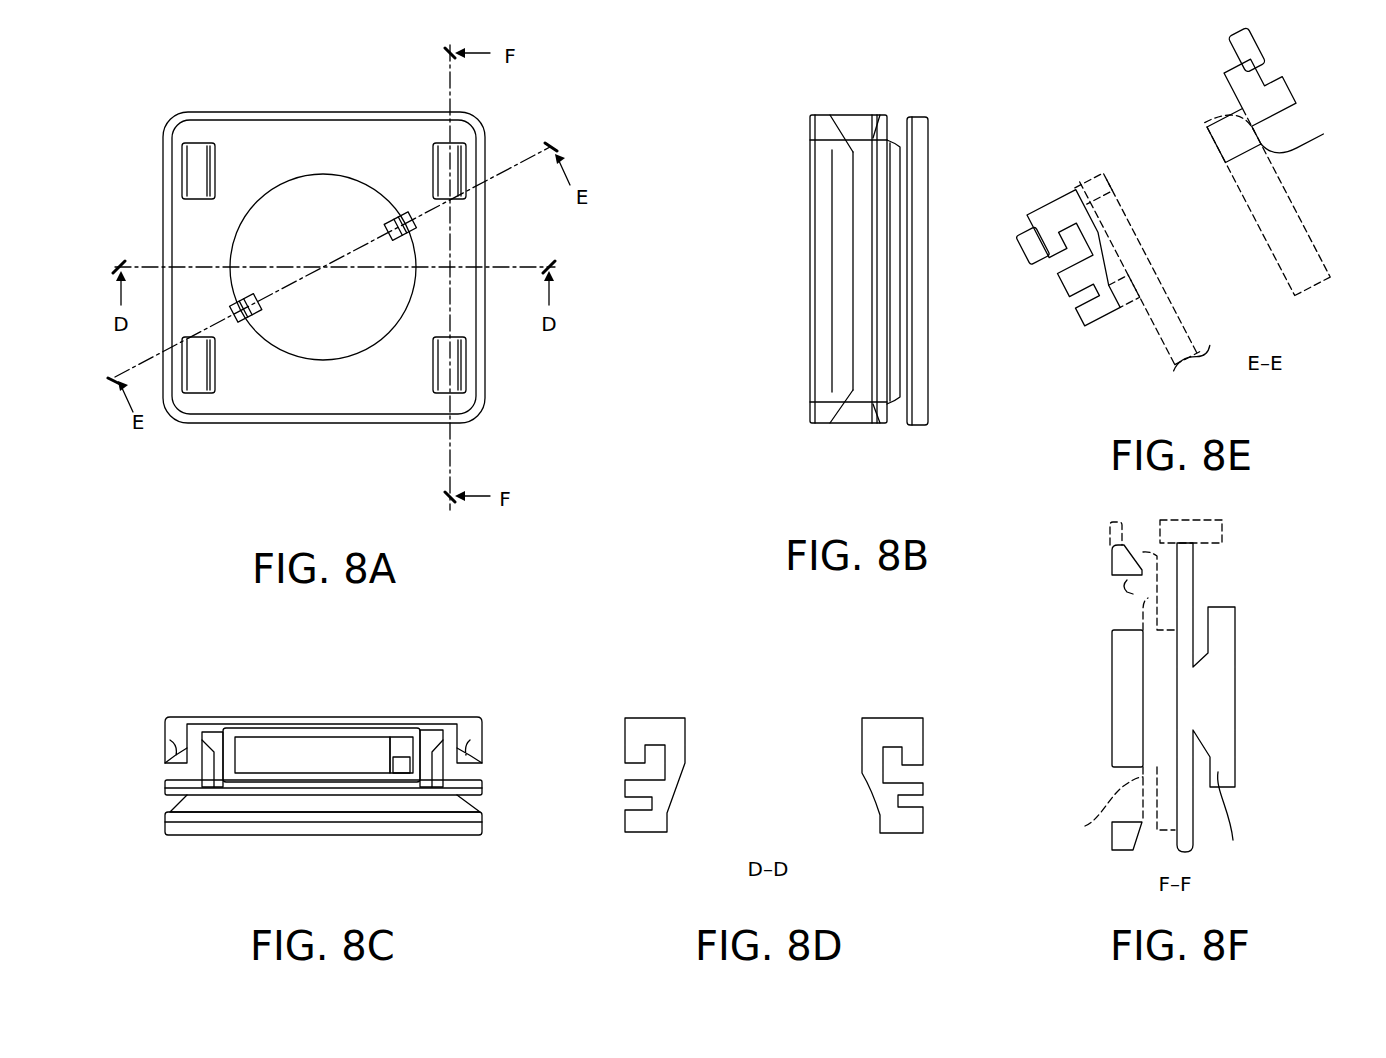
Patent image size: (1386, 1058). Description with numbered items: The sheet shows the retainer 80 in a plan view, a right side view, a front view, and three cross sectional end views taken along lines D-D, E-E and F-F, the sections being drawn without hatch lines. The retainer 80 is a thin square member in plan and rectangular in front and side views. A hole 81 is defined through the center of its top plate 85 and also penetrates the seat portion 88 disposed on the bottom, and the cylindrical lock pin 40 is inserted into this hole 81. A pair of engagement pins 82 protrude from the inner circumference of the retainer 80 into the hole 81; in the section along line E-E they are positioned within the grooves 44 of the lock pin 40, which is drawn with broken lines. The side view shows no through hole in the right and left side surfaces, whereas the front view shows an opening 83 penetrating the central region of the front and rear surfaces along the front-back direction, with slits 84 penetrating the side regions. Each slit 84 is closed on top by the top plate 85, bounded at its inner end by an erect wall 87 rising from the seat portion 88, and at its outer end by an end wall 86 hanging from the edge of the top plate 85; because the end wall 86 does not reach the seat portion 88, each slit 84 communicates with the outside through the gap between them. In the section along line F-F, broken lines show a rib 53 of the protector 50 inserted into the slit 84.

In FIG. 8E, the lock pin 40 is at (1090, 357).
In FIG. 8E, the grooves 44 is at (1268, 185).
In FIG. 8F, the protector 50 is at (1222, 530).
In FIG. 8F, the rib 53 is at (1091, 809).
In FIG. 8A, the retainer 80 is at (324, 429).
In FIG. 8B, the retainer 80 is at (780, 363).
In FIG. 8E, the retainer 80 is at (1018, 316).
In FIG. 8F, the retainer 80 is at (1088, 666).
In FIG. 8A, the hole 81 is at (290, 323).
In FIG. 8A, the engagement pins 82 is at (387, 207).
In FIG. 8E, the engagement pins 82 is at (1112, 210).
In FIG. 8C, the opening 83 is at (300, 750).
In FIG. 8D, the opening 83 is at (755, 752).
In FIG. 8B, the slits 84 is at (873, 188).
In FIG. 8C, the slits 84 is at (455, 730).
In FIG. 8D, the slits 84 is at (895, 755).
In FIG. 8E, the slits 84 is at (1012, 296).
In FIG. 8F, the slits 84 is at (1140, 590).
In FIG. 8A, the top plate 85 is at (287, 148).
In FIG. 8C, the top plate 85 is at (223, 718).
In FIG. 8D, the top plate 85 is at (652, 718).
In FIG. 8E, the top plate 85 is at (1052, 196).
In FIG. 8F, the top plate 85 is at (1112, 558).
In FIG. 8B, the end wall 86 is at (827, 230).
In FIG. 8C, the end wall 86 is at (486, 736).
In FIG. 8D, the end wall 86 is at (625, 737).
In FIG. 8E, the end wall 86 is at (1002, 230).
In FIG. 8C, the erect wall 87 is at (420, 730).
In FIG. 8D, the erect wall 87 is at (670, 770).
In FIG. 8B, the seat portion 88 is at (902, 415).
In FIG. 8C, the seat portion 88 is at (165, 815).
In FIG. 8D, the seat portion 88 is at (625, 820).
In FIG. 8E, the seat portion 88 is at (1053, 322).
In FIG. 8F, the seat portion 88 is at (1234, 822).